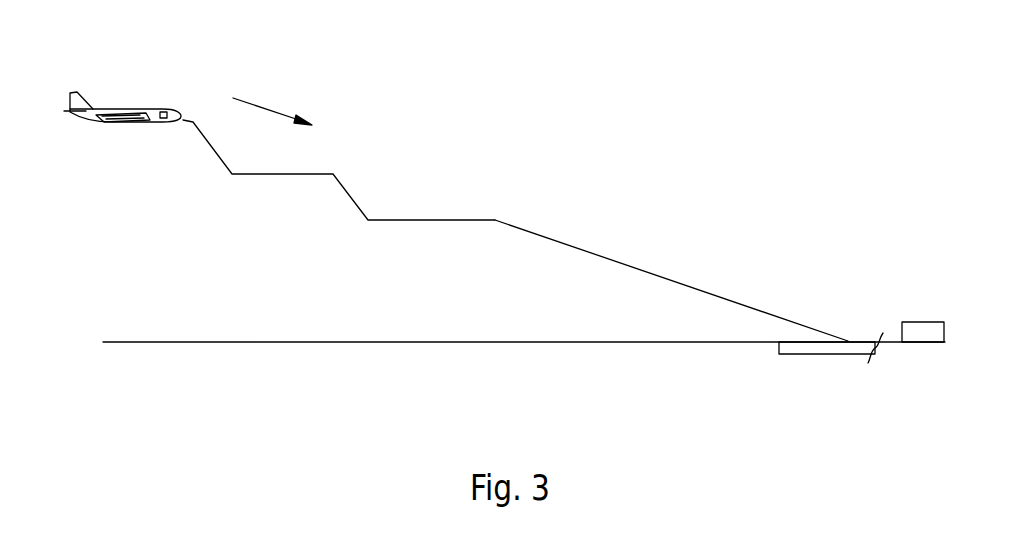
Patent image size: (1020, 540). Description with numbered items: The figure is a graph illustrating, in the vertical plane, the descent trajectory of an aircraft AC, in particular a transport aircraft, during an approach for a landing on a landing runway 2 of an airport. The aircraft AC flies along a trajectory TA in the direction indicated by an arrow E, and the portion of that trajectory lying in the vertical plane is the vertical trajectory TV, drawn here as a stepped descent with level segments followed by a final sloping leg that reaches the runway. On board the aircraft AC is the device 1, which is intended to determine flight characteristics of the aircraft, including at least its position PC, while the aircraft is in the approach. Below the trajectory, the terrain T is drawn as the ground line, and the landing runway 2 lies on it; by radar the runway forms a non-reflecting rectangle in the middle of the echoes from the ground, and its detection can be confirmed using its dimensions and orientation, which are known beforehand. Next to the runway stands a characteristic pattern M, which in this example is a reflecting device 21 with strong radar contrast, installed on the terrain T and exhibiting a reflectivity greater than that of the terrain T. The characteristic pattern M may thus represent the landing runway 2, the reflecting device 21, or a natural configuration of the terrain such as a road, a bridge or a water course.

The position PC is at (111, 79).
The device 1 is at (164, 109).
The arrow E is at (267, 107).
The aircraft AC is at (132, 122).
The vertical trajectory TV is at (273, 174).
The trajectory TA is at (441, 236).
The characteristic pattern M is at (902, 285).
The reflecting device 21 is at (927, 322).
The terrain T is at (368, 342).
The landing runway 2 is at (857, 354).